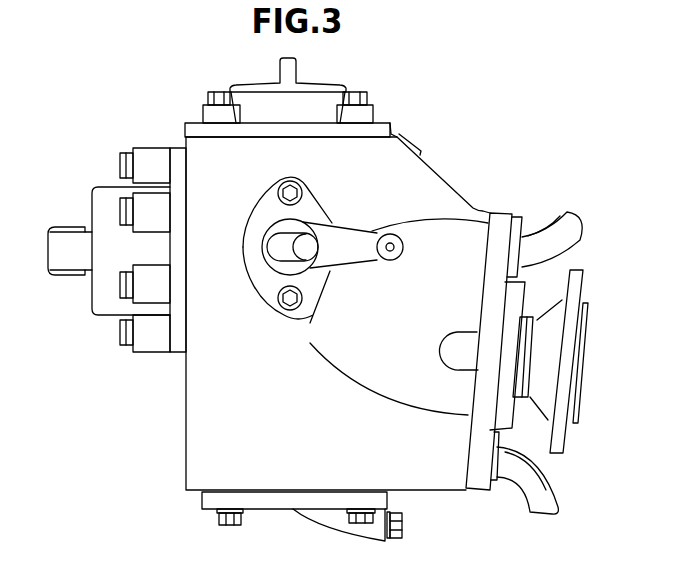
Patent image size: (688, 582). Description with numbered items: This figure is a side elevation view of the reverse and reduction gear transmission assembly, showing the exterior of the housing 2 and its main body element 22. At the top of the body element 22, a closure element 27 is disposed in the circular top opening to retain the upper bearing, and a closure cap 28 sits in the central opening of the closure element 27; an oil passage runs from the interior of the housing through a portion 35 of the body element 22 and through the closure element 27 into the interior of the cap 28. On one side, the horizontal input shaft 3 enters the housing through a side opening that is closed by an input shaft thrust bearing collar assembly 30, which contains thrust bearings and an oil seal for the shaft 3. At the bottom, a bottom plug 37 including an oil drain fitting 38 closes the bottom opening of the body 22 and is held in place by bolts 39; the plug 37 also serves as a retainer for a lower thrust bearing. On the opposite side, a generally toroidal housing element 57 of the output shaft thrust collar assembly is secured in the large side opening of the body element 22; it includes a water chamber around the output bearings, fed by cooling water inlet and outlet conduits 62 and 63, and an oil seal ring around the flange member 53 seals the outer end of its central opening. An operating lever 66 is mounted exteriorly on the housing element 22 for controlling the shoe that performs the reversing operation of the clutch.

The housing 2 is at (437, 172).
The horizontal input shaft 3 is at (65, 228).
The main body element 22 is at (186, 387).
The closure element 27 is at (195, 123).
The closure cap 28 is at (300, 88).
The input shaft thrust bearing collar assembly 30 is at (107, 187).
The portion of the housing body element 35 is at (183, 140).
The bottom plug 37 is at (202, 498).
The oil drain fitting 38 is at (403, 527).
The bolts 39 is at (230, 526).
The flange member 53 is at (584, 283).
The toroidal housing element 57 is at (500, 213).
The inlet conduit 62 is at (585, 230).
The outlet conduit 63 is at (560, 479).
The operating lever 66 is at (348, 231).